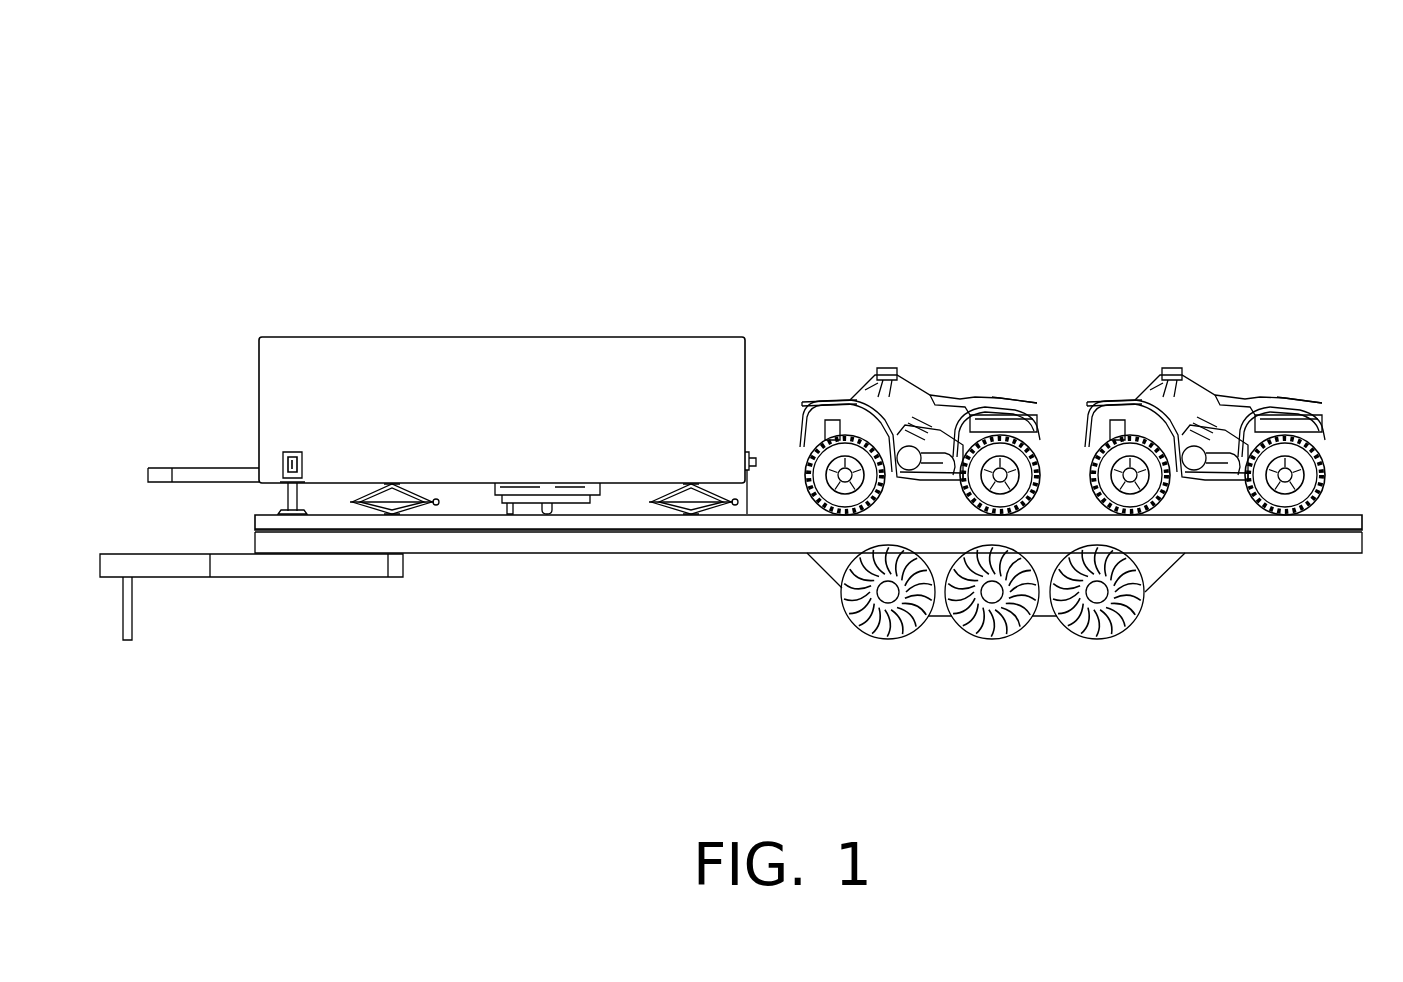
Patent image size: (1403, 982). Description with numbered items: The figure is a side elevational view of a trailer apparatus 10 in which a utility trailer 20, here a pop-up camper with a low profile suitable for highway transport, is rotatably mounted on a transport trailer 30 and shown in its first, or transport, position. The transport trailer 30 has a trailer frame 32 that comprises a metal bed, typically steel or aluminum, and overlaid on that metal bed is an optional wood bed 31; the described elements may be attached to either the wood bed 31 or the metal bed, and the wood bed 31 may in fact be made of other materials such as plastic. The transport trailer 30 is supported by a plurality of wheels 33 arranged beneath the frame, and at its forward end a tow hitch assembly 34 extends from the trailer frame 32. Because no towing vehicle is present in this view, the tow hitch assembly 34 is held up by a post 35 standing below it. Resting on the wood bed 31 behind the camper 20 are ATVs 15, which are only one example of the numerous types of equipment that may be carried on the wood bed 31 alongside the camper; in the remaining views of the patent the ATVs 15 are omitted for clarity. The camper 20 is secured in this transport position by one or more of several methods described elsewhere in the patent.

The trailer apparatus 10 is at (1047, 155).
The ATVs 15 is at (1108, 393).
The utility trailer 20 is at (307, 336).
The transport trailer 30 is at (1363, 553).
The wood bed 31 is at (1333, 514).
The trailer frame 32 is at (1248, 553).
The wheels 33 is at (992, 640).
The tow hitch assembly 34 is at (197, 578).
The post 35 is at (135, 612).